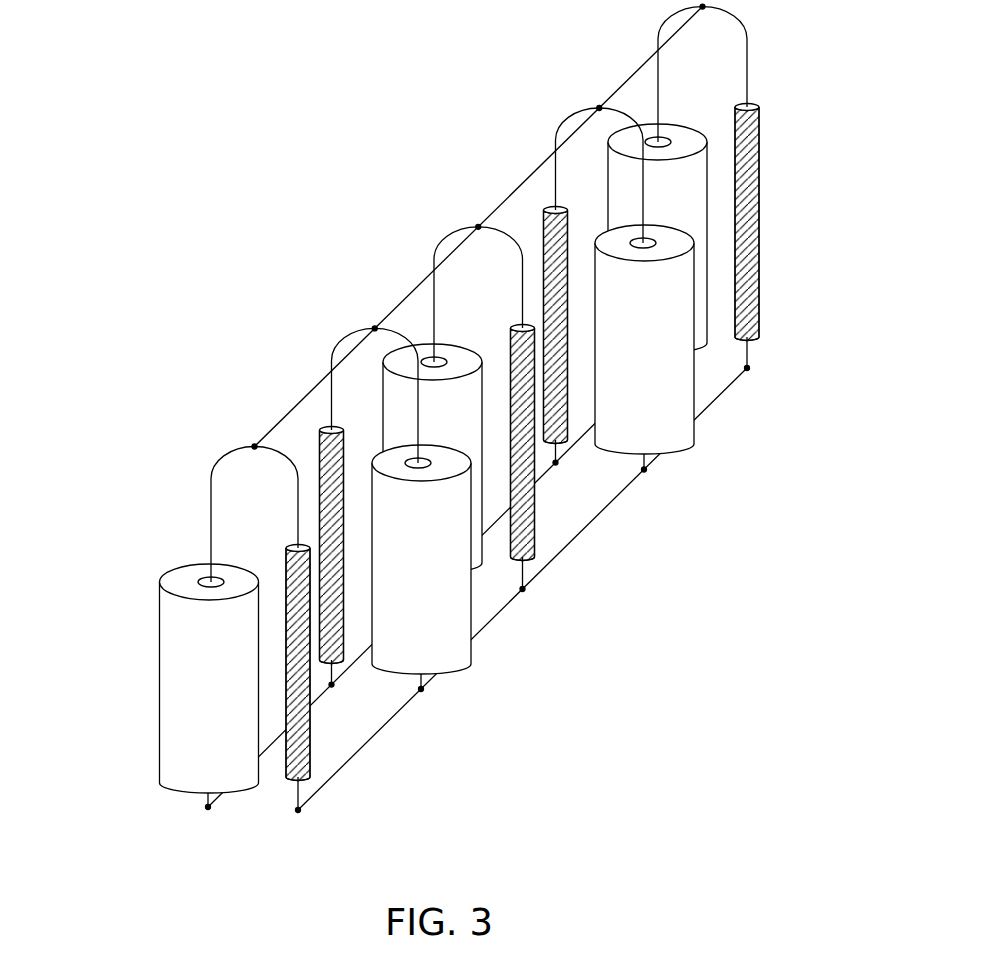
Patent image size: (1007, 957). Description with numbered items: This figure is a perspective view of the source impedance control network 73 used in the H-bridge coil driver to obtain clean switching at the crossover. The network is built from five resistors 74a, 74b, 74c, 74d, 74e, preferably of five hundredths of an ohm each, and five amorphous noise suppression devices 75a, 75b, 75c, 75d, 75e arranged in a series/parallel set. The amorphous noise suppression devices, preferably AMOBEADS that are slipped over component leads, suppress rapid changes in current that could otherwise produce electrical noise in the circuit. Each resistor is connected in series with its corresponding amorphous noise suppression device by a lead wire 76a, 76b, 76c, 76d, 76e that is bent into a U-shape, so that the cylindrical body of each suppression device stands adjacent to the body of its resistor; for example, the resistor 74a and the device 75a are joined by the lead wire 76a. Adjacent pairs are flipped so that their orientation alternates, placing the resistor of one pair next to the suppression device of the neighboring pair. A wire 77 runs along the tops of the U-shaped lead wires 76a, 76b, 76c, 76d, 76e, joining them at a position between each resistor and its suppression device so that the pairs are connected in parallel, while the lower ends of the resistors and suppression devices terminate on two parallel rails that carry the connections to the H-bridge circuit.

The source impedance control network 73 is at (340, 191).
The resistor 74a is at (312, 765).
The resistor 74b is at (320, 440).
The resistor 74c is at (535, 545).
The resistor 74d is at (543, 217).
The resistor 74e is at (760, 272).
The amorphous noise suppression device 75a is at (170, 628).
The amorphous noise suppression device 75b is at (460, 630).
The amorphous noise suppression device 75c is at (425, 345).
The amorphous noise suppression device 75d is at (684, 417).
The amorphous noise suppression device 75e is at (615, 122).
The lead wire 76a is at (211, 472).
The lead wire 76b is at (332, 352).
The lead wire 76c is at (434, 250).
The lead wire 76d is at (555, 128).
The lead wire 76e is at (697, 7).
The bus wire 77 is at (683, 28).